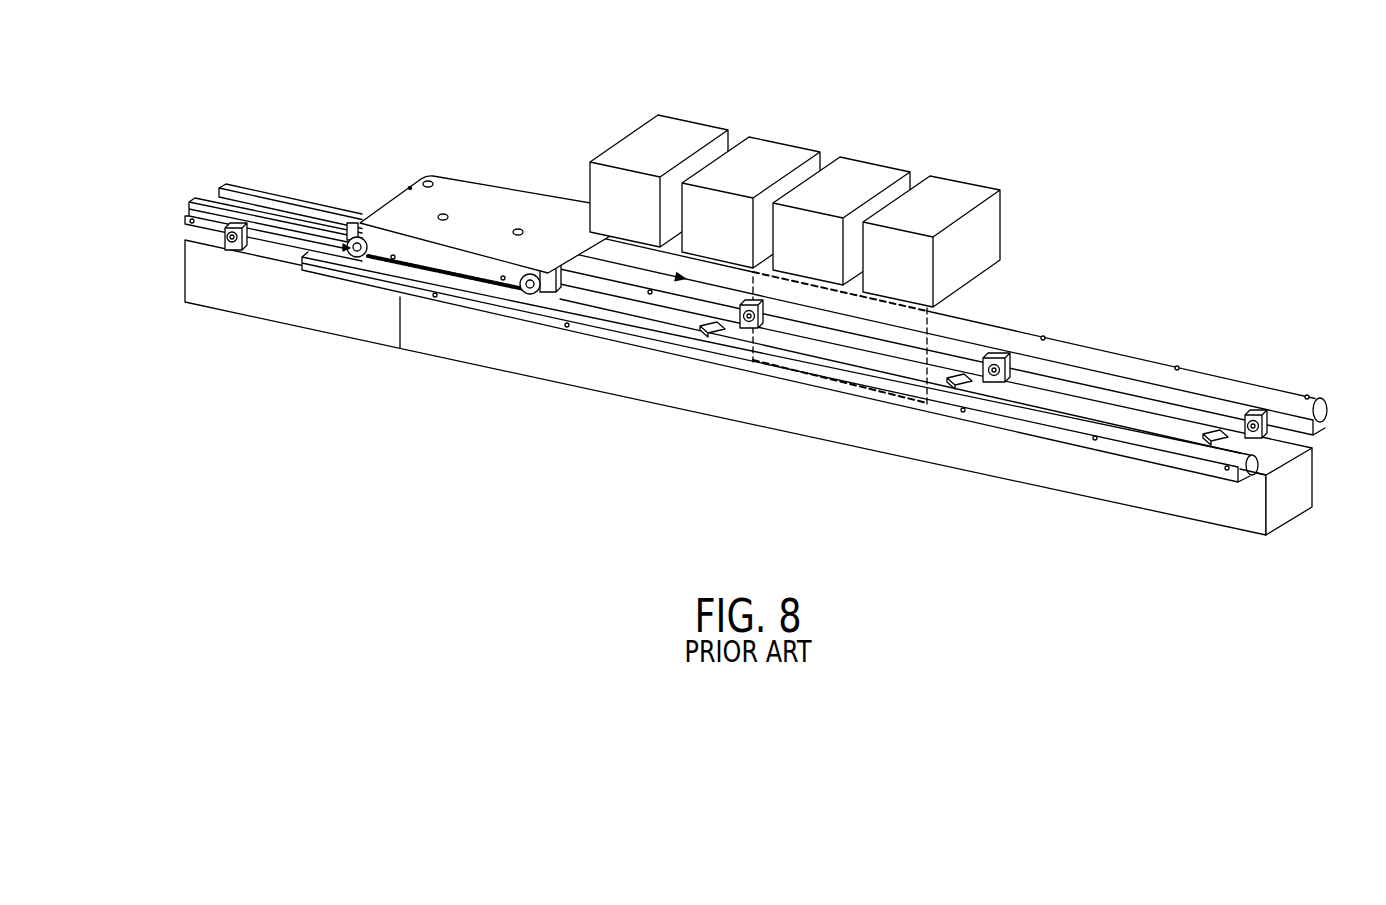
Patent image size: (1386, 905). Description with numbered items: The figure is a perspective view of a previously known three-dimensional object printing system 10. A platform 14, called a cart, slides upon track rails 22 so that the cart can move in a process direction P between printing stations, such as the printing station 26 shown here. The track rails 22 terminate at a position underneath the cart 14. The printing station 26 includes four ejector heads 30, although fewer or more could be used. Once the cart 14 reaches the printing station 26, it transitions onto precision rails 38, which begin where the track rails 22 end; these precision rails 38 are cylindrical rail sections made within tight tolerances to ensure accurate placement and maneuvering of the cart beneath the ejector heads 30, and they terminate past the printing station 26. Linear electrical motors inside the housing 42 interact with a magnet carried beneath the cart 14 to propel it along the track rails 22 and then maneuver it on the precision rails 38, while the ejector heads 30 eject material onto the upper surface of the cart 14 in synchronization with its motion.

The three-dimensional object printing system 10 is at (412, 496).
The platform 14 is at (490, 185).
The track rails 22 is at (207, 202).
The printing station 26 is at (798, 170).
The ejector heads 30 is at (1007, 130).
The precision rails 38 is at (1100, 343).
The housing 42 is at (1026, 471).
The process direction P is at (608, 295).